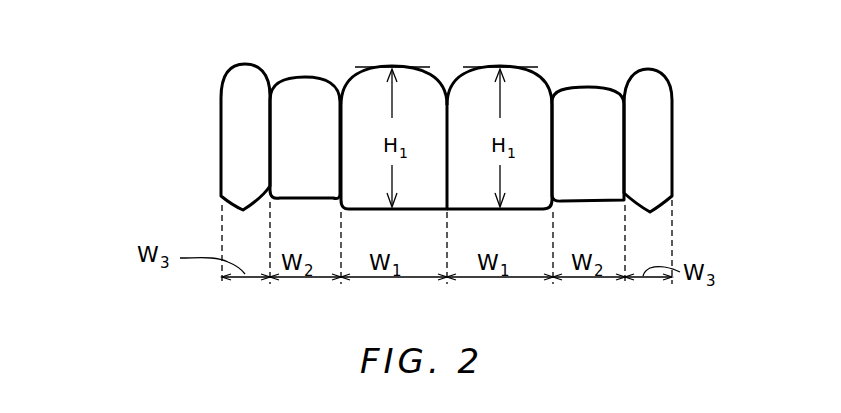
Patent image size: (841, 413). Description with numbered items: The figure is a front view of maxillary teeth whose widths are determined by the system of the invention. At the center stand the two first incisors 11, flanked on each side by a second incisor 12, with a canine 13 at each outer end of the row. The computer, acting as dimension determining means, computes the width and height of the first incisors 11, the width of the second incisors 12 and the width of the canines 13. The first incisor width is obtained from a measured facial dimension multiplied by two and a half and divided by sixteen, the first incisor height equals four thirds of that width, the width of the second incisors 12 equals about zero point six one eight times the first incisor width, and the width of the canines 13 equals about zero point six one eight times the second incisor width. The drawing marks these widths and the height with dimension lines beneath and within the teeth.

The first incisors 11 is at (410, 67).
The second incisors 12 is at (298, 78).
The canines 13 is at (255, 66).